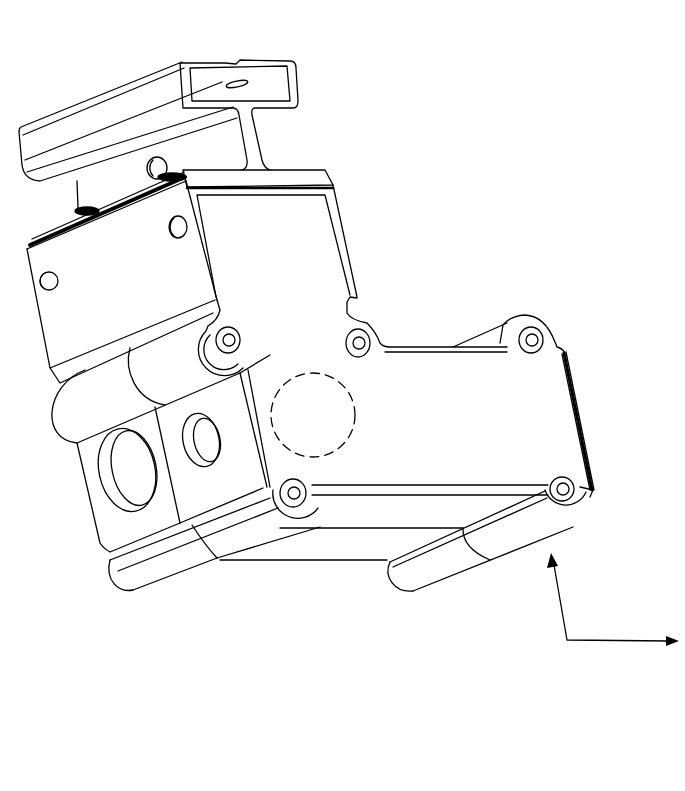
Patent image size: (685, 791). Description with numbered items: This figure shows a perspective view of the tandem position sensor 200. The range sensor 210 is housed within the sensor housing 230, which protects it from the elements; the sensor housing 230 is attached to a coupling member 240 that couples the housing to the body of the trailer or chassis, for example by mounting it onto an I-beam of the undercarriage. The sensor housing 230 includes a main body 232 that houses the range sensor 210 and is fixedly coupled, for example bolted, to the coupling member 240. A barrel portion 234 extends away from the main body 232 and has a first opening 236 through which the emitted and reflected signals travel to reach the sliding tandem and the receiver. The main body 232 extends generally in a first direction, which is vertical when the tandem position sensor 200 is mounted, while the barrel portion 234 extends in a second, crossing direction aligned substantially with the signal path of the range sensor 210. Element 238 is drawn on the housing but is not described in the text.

The tandem position sensor 200 is at (514, 78).
The range sensor 210 is at (300, 377).
The sensor housing 230 is at (498, 254).
The main body 232 is at (293, 258).
The barrel portion 234 is at (415, 376).
The first opening 236 is at (598, 408).
The mounting block with openings 238 is at (134, 480).
The coupling member 240 is at (58, 112).